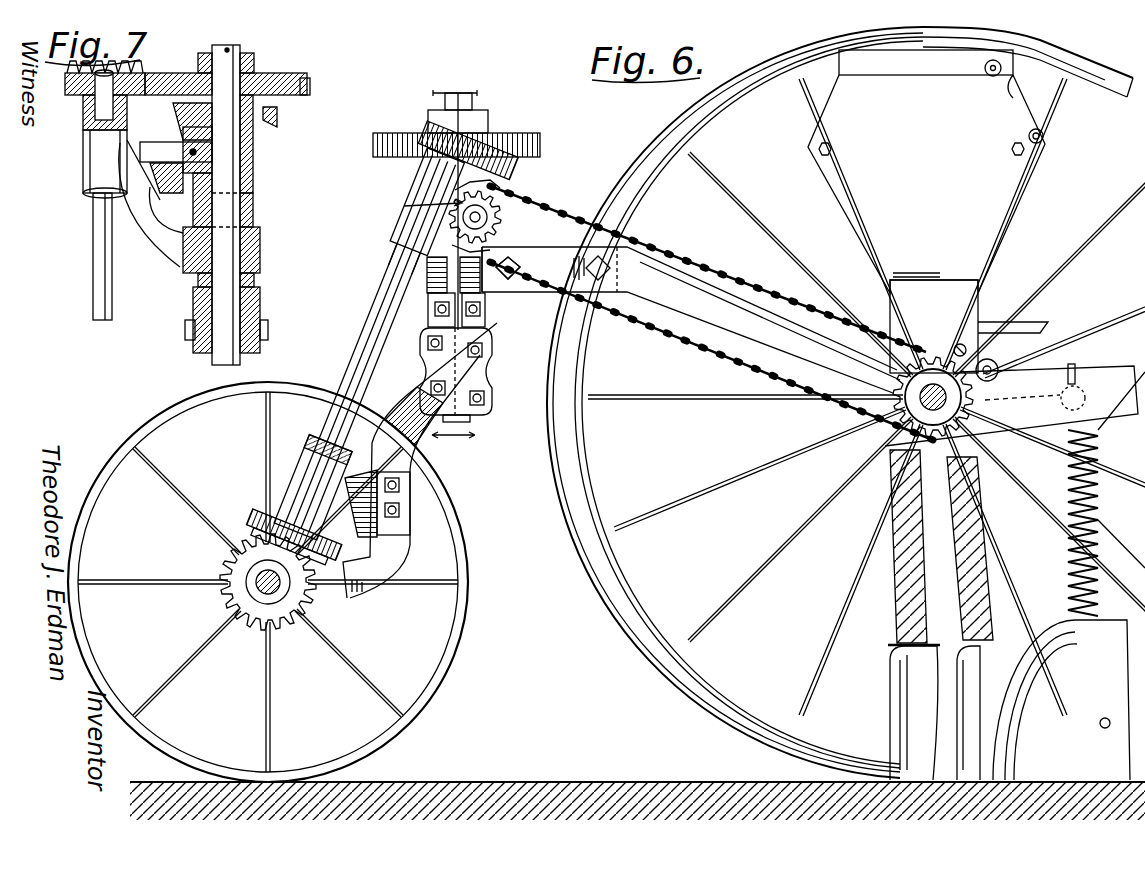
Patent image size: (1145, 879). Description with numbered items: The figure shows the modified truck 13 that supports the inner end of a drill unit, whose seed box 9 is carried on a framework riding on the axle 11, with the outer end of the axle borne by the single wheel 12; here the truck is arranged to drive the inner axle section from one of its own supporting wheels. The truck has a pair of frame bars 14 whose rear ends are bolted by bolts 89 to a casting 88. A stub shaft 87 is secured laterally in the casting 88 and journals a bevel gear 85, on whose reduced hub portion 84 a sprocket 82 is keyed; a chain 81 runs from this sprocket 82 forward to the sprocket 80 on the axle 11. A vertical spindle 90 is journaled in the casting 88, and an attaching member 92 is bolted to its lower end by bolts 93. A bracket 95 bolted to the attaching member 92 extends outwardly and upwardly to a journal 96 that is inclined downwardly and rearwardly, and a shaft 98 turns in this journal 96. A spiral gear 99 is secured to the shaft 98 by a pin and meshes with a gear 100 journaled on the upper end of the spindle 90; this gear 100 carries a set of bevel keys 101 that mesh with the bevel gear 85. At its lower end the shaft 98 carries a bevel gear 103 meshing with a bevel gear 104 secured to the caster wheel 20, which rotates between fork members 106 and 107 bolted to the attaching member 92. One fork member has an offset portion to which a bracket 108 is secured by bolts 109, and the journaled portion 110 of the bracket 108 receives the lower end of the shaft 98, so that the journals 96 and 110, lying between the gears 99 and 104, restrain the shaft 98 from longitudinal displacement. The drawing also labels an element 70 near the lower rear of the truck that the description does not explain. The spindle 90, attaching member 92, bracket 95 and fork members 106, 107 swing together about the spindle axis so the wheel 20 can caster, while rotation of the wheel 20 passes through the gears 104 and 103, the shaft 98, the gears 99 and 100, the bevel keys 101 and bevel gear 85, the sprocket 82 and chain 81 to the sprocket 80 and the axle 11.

In FIG. 6, the seed box 9 is at (838, 203).
In FIG. 6, the axle 11 is at (918, 403).
In FIG. 6, the single wheel 12 is at (623, 607).
In FIG. 6, the truck 13 is at (1106, 381).
In FIG. 6, the frame bars 14 is at (783, 350).
In FIG. 6, the caster wheel 20 is at (452, 670).
In FIG. 6, the shoe 70 is at (1066, 624).
In FIG. 6, the sprocket 80 is at (905, 425).
In FIG. 6, the chain 81 is at (732, 361).
In FIG. 6, the sprocket 82 is at (501, 200).
In FIG. 7, the sprocket 82 is at (162, 184).
In FIG. 6, the reduced portion 84 is at (494, 217).
In FIG. 7, the reduced portion 84 is at (150, 180).
In FIG. 6, the bevel gear 85 is at (498, 210).
In FIG. 7, the bevel gear 85 is at (160, 222).
In FIG. 6, the stub shaft 87 is at (419, 207).
In FIG. 7, the stub shaft 87 is at (214, 155).
In FIG. 6, the casting 88 is at (500, 241).
In FIG. 7, the casting 88 is at (254, 174).
In FIG. 6, the bolts 89 is at (521, 267).
In FIG. 6, the spindle 90 is at (446, 101).
In FIG. 7, the spindle 90 is at (237, 47).
In FIG. 6, the attaching member 92 is at (487, 321).
In FIG. 7, the attaching member 92 is at (258, 263).
In FIG. 6, the bolts 93 is at (484, 346).
In FIG. 7, the bolts 93 is at (268, 329).
In FIG. 6, the bracket 95 is at (424, 265).
In FIG. 7, the bracket 95 is at (142, 265).
In FIG. 6, the journal 96 is at (404, 242).
In FIG. 7, the journal 96 is at (86, 193).
In FIG. 6, the shaft 98 is at (372, 353).
In FIG. 7, the shaft 98 is at (98, 316).
In FIG. 6, the spiral gear 99 is at (503, 171).
In FIG. 7, the spiral gear 99 is at (84, 96).
In FIG. 6, the gear 100 is at (527, 140).
In FIG. 7, the gear 100 is at (180, 68).
In FIG. 7, the bevel keys 101 is at (272, 120).
In FIG. 6, the bevel gear 103 is at (255, 521).
In FIG. 6, the bevel gear 104 is at (232, 556).
In FIG. 6, the fork member 106 is at (412, 462).
In FIG. 6, the fork member 107 is at (362, 443).
In FIG. 6, the bracket 108 is at (384, 531).
In FIG. 6, the bolts 109 is at (400, 512).
In FIG. 6, the journaled portion 110 is at (312, 464).